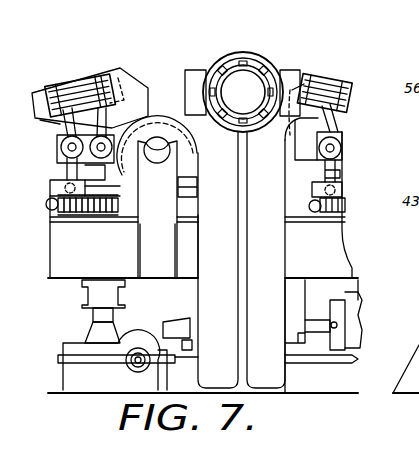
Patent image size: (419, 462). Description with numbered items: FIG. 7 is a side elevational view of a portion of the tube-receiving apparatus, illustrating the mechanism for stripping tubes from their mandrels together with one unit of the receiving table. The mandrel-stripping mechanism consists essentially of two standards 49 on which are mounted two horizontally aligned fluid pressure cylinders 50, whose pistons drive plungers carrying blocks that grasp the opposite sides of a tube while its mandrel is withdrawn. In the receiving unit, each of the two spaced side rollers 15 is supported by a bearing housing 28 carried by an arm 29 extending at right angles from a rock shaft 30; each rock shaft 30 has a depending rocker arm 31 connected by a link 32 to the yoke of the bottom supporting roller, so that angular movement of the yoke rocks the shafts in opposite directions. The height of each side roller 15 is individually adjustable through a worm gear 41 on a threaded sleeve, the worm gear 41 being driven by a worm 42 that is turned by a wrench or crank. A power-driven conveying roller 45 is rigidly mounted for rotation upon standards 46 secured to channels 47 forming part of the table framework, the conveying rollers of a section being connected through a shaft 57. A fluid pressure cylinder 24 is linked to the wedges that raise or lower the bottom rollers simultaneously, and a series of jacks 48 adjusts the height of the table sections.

The side roller 15 is at (102, 80).
The bearing housing 28 is at (49, 94).
The arm 29 is at (55, 122).
The rock shaft 30 is at (58, 150).
The rocker arm 31 is at (68, 170).
The worm 42 is at (50, 204).
The worm gear 41 is at (88, 214).
The link 32 is at (118, 186).
The standard 46 is at (148, 255).
The channel 47 is at (70, 264).
The jack 48 is at (68, 368).
The conveying roller 45 is at (157, 122).
The fluid pressure cylinder 50 is at (248, 80).
The shaft 57 is at (345, 171).
The standard 49 is at (248, 257).
The fluid pressure cylinder 24 is at (352, 322).